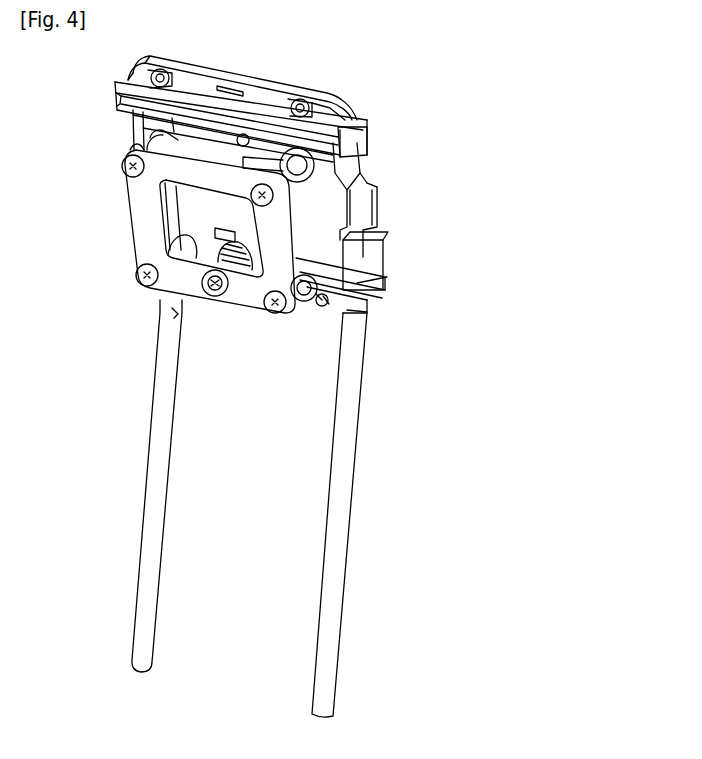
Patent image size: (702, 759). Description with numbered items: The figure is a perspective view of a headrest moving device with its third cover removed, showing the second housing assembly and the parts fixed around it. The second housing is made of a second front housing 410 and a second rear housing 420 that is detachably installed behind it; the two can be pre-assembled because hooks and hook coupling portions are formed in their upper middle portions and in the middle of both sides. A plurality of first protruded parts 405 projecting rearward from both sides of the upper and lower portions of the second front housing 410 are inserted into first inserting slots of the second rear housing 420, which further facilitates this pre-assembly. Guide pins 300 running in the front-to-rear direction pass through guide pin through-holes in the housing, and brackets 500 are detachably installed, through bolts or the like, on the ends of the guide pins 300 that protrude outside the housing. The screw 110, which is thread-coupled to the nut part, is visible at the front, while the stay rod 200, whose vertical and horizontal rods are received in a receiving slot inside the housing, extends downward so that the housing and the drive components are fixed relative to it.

The second rear housing 420 is at (330, 97).
The first protruded parts 405 is at (362, 138).
The second front housing 410 is at (363, 243).
The brackets 500 is at (150, 223).
The screw 110 is at (235, 272).
The guide pins 300 is at (306, 290).
The stay rod 200 is at (358, 369).